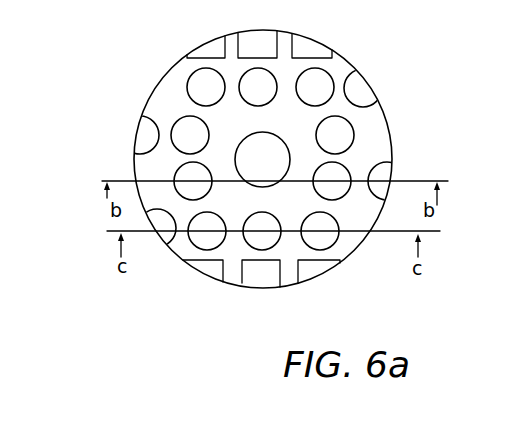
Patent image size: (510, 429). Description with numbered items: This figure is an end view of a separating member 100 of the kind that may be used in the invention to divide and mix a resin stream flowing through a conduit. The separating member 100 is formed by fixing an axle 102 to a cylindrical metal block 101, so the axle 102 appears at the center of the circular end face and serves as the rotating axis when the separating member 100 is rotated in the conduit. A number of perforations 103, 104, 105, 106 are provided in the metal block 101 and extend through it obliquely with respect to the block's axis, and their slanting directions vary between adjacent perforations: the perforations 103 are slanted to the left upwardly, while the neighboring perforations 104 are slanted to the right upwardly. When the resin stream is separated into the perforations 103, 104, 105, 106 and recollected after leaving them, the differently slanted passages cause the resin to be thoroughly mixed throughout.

The separating member 100 is at (371, 125).
The cylindrical metal block 101 is at (165, 90).
The axle 102 is at (257, 143).
The perforations 103 is at (215, 240).
The perforations 104 is at (183, 175).
The perforations 105 is at (180, 131).
The perforations 106 is at (203, 85).